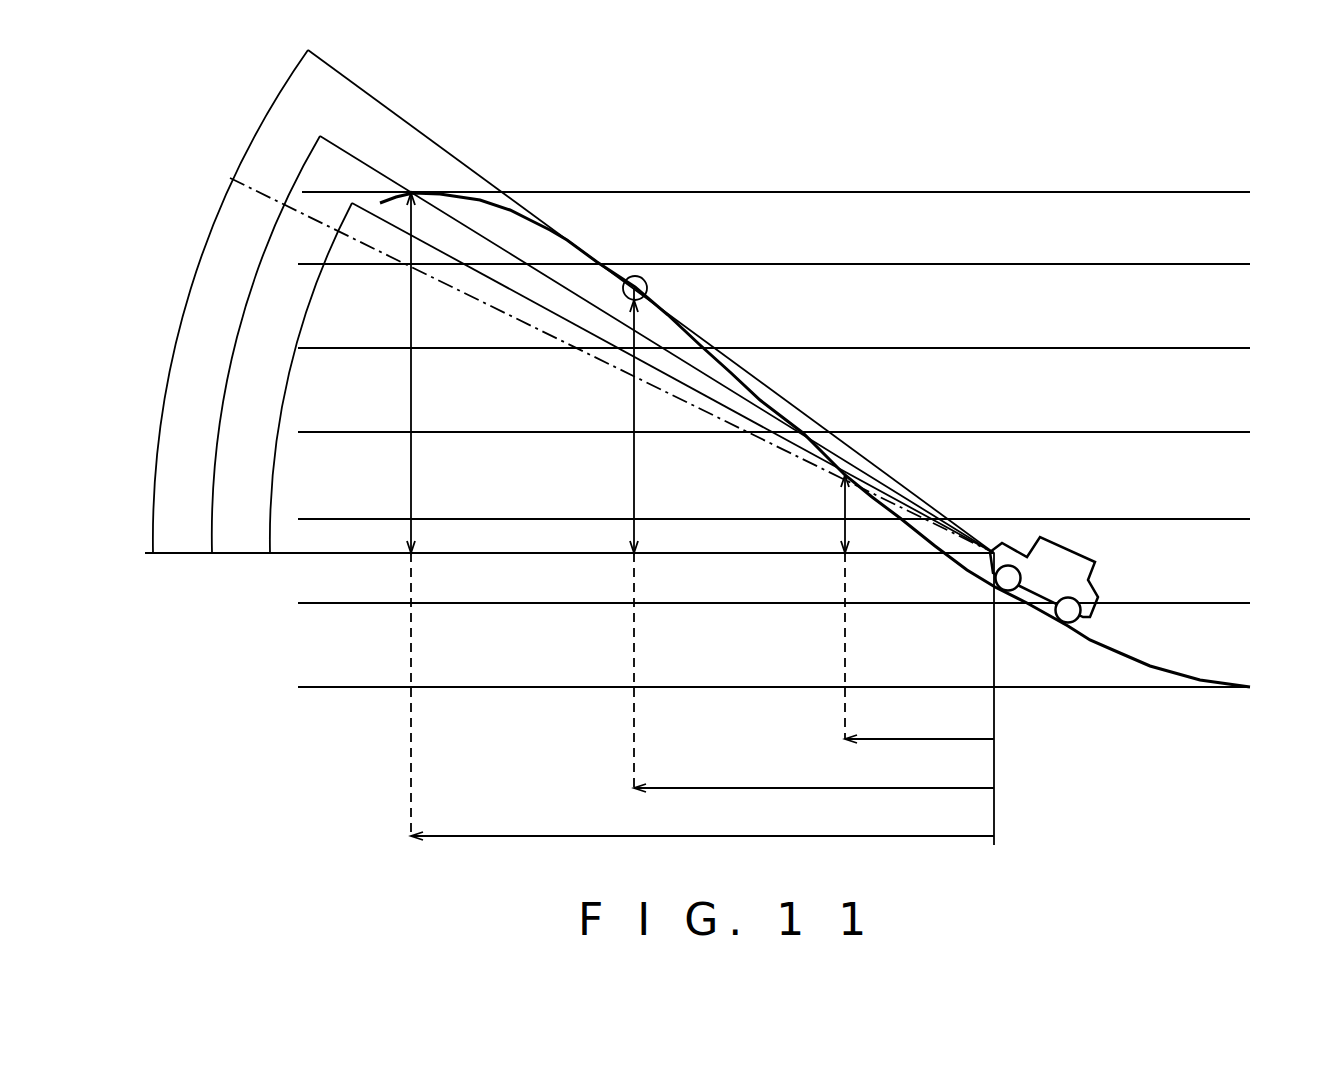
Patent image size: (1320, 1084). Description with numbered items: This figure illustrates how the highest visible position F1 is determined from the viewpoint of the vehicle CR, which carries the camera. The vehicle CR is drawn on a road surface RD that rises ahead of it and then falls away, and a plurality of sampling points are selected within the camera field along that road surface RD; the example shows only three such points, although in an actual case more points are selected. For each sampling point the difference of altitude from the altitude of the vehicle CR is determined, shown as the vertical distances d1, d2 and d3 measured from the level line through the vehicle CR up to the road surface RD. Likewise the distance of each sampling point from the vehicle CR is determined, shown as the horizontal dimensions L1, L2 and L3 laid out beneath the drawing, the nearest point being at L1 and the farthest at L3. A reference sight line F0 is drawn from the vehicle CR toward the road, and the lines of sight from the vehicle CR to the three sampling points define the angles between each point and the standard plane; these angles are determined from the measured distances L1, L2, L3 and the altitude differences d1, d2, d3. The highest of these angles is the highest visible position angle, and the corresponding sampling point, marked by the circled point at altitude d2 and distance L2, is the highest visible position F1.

The reference optical axis F0 is at (521, 322).
The highest visible position F1 is at (648, 290).
The vehicle CR is at (1073, 550).
The road surface RD is at (1133, 655).
The altitude difference at third sampling point d3 is at (388, 514).
The altitude difference at second sampling point d2 is at (609, 538).
The altitude difference at first sampling point d1 is at (821, 607).
The distance to first sampling point L1 is at (919, 727).
The distance to second sampling point L2 is at (814, 775).
The distance to third sampling point L3 is at (702, 823).